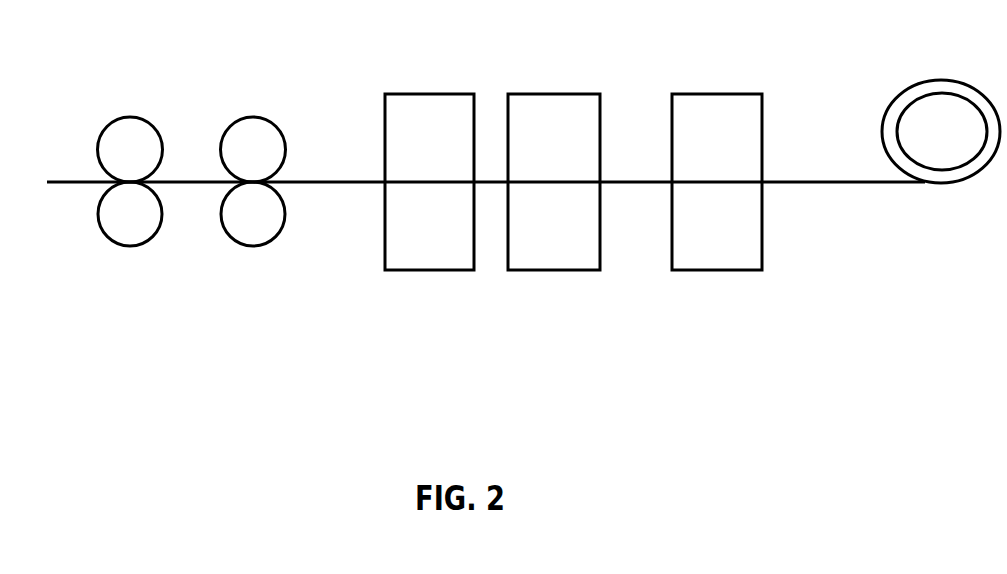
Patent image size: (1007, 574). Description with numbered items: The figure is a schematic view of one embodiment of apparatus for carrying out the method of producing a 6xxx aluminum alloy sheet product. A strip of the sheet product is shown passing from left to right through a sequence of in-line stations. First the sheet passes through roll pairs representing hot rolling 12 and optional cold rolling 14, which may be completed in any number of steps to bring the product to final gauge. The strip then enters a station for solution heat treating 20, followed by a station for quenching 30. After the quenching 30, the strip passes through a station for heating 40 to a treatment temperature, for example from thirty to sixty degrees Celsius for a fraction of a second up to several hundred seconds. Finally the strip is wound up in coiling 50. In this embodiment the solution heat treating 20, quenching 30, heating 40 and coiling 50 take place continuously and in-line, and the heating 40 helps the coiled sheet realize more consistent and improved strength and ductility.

The hot rolling 12 is at (117, 102).
The optional cold rolling 14 is at (270, 88).
The solution heat treating 20 is at (416, 72).
The quenching 30 is at (547, 72).
The heating 40 is at (708, 72).
The coiling 50 is at (968, 72).